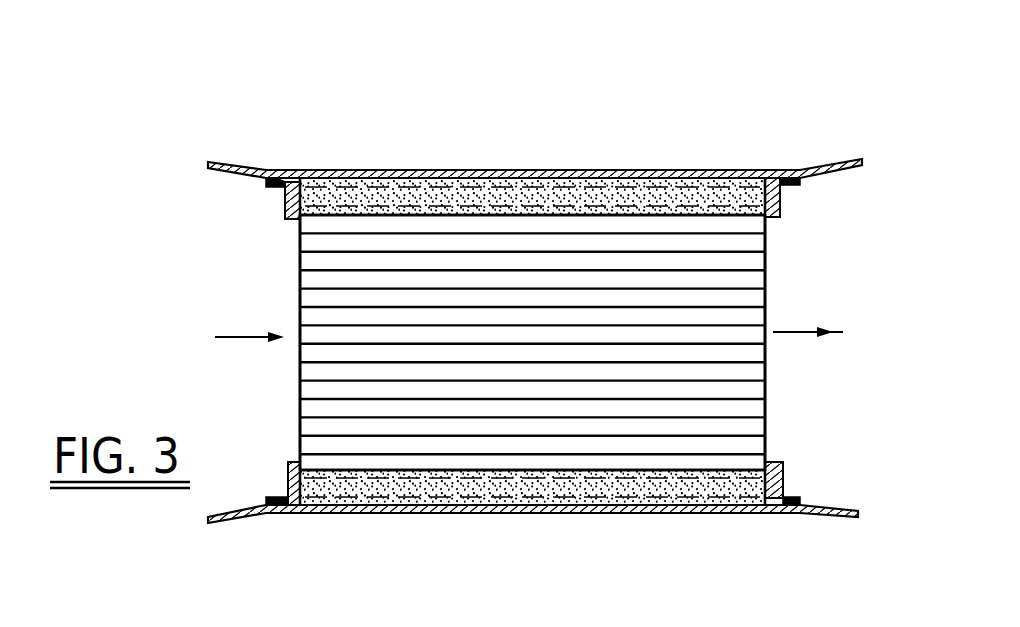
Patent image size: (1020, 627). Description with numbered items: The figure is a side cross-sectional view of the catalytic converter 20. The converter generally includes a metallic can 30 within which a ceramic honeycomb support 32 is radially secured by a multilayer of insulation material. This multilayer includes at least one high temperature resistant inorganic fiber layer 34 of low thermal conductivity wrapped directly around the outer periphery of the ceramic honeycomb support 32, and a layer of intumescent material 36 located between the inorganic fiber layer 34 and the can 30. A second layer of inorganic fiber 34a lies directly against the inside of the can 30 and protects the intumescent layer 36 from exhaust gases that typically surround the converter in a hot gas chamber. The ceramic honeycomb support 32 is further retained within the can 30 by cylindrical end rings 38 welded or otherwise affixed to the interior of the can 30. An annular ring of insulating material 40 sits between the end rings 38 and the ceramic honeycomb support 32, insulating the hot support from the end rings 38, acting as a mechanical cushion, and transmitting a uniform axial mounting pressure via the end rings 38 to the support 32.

The catalytic converter 20 is at (589, 524).
The metallic can 30 is at (675, 175).
The ceramic honeycomb support 32 is at (318, 388).
The inorganic fiber layer 34 is at (487, 212).
The second layer of inorganic fiber 34a is at (397, 178).
The intumescent material layer 36 is at (578, 195).
The cylindrical end rings 38 is at (783, 199).
The annular ring of insulating material 40 is at (770, 180).